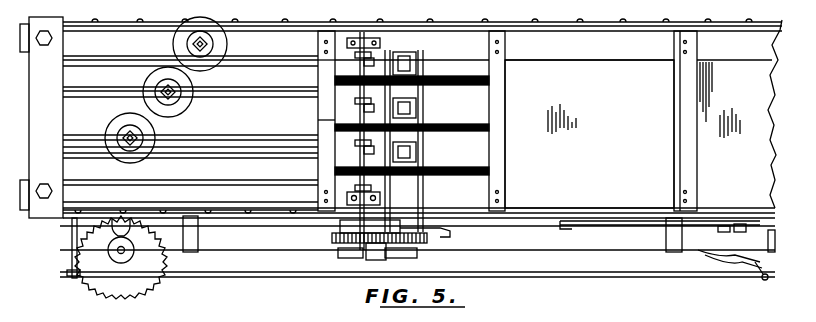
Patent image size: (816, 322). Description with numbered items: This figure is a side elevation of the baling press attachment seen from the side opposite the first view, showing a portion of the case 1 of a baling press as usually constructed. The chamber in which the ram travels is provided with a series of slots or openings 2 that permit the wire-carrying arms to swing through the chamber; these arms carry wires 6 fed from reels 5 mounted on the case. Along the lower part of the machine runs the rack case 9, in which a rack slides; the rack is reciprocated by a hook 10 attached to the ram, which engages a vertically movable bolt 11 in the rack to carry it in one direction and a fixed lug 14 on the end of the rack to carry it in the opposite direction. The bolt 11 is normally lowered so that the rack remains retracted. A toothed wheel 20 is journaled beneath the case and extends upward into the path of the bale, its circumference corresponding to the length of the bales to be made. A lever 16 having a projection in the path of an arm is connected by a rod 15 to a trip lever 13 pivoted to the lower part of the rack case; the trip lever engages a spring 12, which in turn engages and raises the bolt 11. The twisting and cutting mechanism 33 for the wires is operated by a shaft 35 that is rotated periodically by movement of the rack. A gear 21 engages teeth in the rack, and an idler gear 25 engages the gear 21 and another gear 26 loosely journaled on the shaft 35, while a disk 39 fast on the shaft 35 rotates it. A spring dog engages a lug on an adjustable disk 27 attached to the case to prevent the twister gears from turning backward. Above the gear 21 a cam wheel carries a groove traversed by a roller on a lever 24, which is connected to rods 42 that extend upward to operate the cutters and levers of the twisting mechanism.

The case of the baling press 1 is at (622, 134).
The slots or openings 2 is at (462, 78).
The reels 5 is at (173, 43).
The wires 6 is at (258, 63).
The rack case 9 is at (272, 245).
The hook 10 is at (660, 246).
The vertically movable bolt 11 is at (726, 226).
The spring 12 is at (735, 263).
The trip lever 13 is at (760, 275).
The fixed lug 14 is at (740, 224).
The rod 15 is at (502, 273).
The lever 16 is at (74, 278).
The toothed wheel 20 is at (119, 298).
The gear 21 is at (406, 257).
The lever 24 is at (445, 233).
The idler gear 25 is at (338, 245).
The gear 26 is at (352, 259).
The adjustable disk 27 is at (338, 222).
The twisting and cutting mechanism 33 is at (404, 52).
The shaft 35 is at (350, 60).
The disk 39 is at (376, 257).
The rods 42 is at (395, 192).